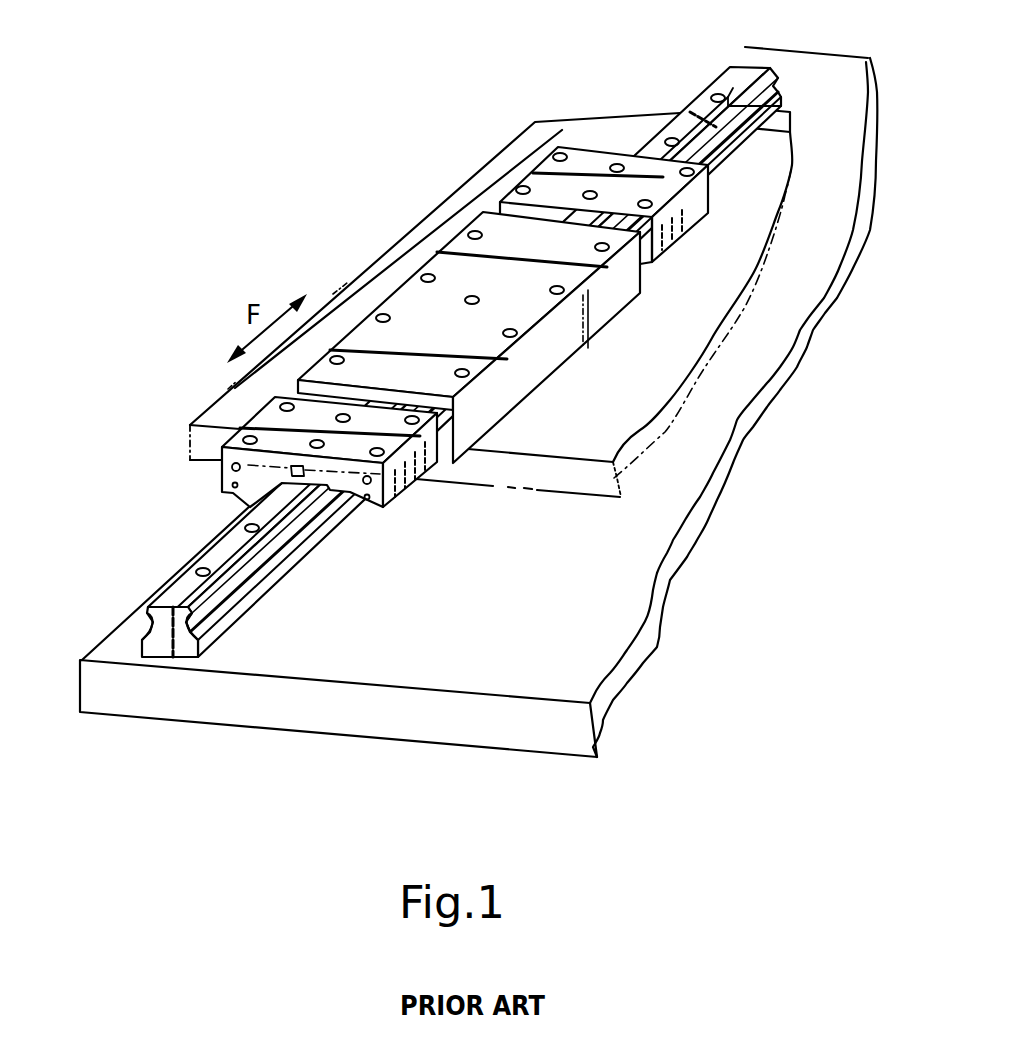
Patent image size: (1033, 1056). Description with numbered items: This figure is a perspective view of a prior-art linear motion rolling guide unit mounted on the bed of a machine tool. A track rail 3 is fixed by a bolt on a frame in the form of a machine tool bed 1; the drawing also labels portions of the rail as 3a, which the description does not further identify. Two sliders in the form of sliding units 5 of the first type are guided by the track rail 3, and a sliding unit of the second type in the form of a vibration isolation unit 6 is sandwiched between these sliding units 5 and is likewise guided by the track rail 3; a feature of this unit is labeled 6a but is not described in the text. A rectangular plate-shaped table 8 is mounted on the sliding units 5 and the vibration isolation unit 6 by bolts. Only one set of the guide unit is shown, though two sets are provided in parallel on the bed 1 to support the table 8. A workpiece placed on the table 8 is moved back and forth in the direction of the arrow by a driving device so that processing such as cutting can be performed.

The machine tool bed 1 is at (494, 735).
The track rail 3 is at (182, 590).
The rail grooves 3a is at (143, 608).
The sliding units 5 is at (540, 183).
The vibration isolation unit 6 is at (413, 313).
The mounting hole 6a is at (472, 296).
The table 8 is at (608, 128).